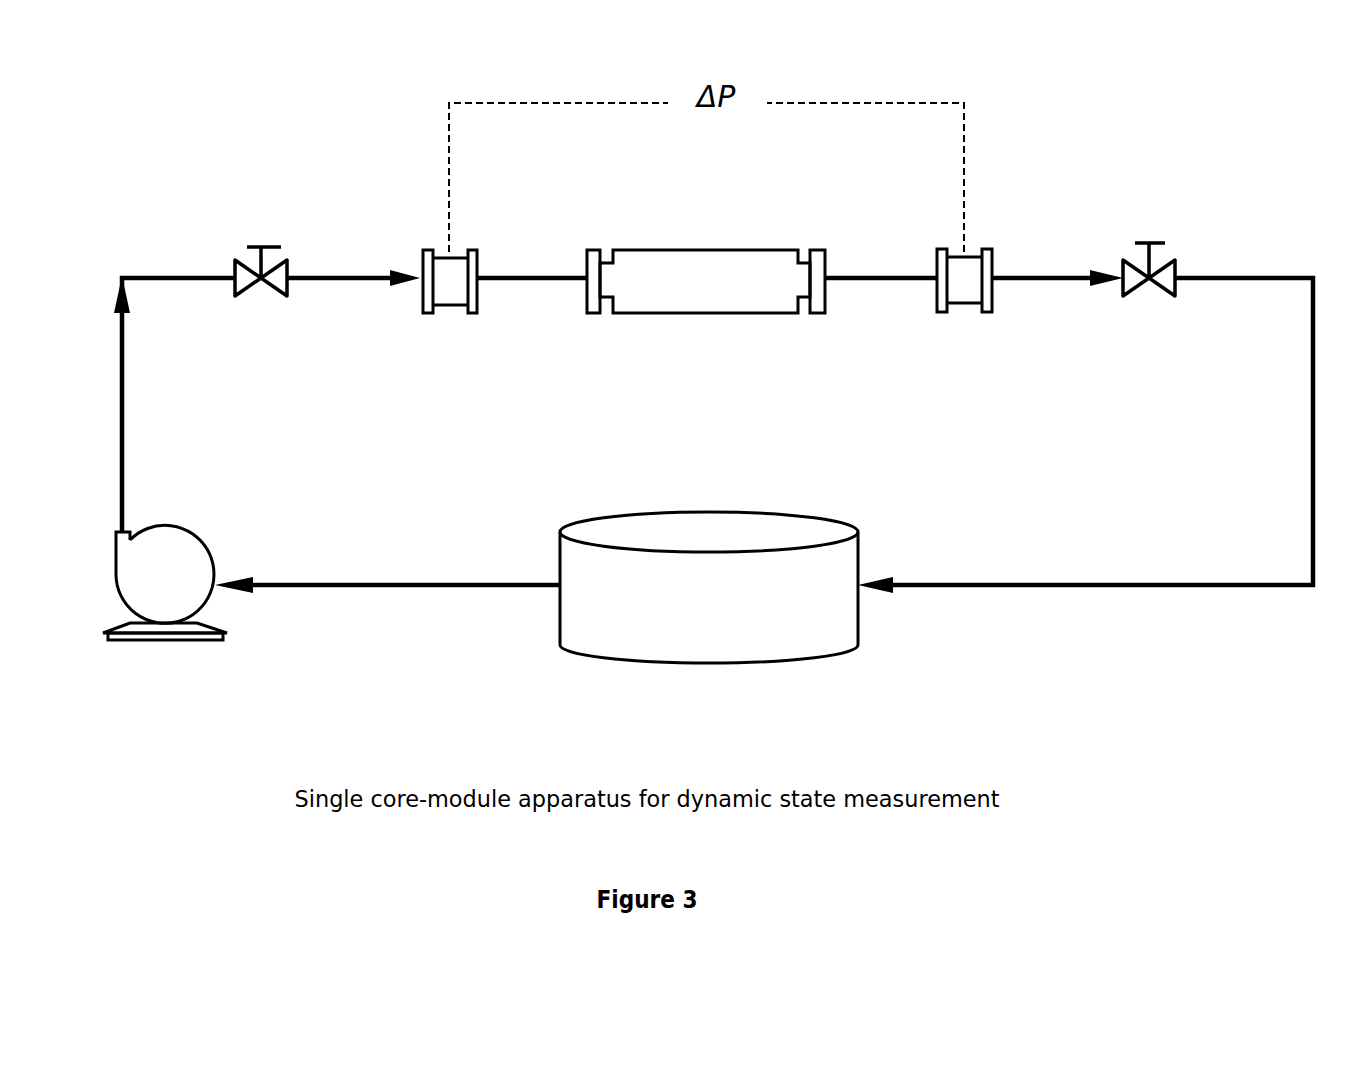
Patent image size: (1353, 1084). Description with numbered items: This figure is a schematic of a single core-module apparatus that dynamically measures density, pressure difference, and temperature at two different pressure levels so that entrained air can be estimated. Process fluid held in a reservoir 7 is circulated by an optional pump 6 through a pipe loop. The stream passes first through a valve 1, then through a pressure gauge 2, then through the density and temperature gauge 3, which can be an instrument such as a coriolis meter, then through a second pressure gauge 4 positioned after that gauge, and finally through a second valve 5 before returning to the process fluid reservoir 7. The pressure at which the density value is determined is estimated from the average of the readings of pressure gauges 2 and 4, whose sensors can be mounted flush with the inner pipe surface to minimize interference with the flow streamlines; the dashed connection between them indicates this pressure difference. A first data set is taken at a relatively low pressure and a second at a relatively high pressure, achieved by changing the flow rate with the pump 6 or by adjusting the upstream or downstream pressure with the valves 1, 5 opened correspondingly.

The valve 1 is at (265, 265).
The pressure gauge 2 is at (449, 292).
The density and temperature gauge 3 is at (710, 297).
The pressure gauge 4 is at (967, 297).
The valve 5 is at (1149, 265).
The pump 6 is at (165, 589).
The Process Fluid 7 is at (709, 591).